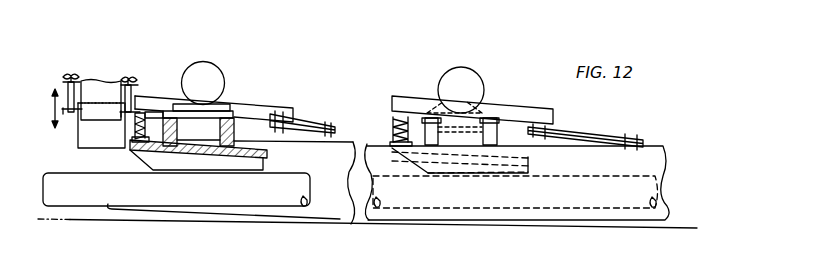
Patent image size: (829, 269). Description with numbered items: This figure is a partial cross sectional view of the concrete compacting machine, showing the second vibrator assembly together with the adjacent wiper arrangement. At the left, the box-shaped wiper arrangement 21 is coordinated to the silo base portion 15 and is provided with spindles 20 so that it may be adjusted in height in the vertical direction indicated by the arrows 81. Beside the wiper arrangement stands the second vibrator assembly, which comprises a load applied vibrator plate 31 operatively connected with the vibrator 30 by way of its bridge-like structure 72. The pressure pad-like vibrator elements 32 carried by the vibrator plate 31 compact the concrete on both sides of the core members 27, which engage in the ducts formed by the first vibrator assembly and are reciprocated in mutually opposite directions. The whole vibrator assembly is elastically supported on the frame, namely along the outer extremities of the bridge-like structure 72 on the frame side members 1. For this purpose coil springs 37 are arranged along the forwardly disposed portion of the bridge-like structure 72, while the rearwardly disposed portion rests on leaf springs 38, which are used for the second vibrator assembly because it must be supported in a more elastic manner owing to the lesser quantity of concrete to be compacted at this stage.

The side wall or bearer member 1 is at (276, 211).
The silo base portion 15 is at (93, 86).
The spindle 20 is at (92, 87).
The box-shaped wiper arrangement 21 is at (84, 132).
The core member 27 is at (74, 188).
The vibrator 30 is at (216, 76).
The vibrator plate 31 is at (208, 159).
The pressure pad-like vibrator element 32 is at (158, 158).
The coil spring 37 is at (398, 128).
The leaf spring 38 is at (586, 138).
The bridge-like structure 72 is at (257, 109).
The arrow indicating vertical direction 81 is at (47, 108).